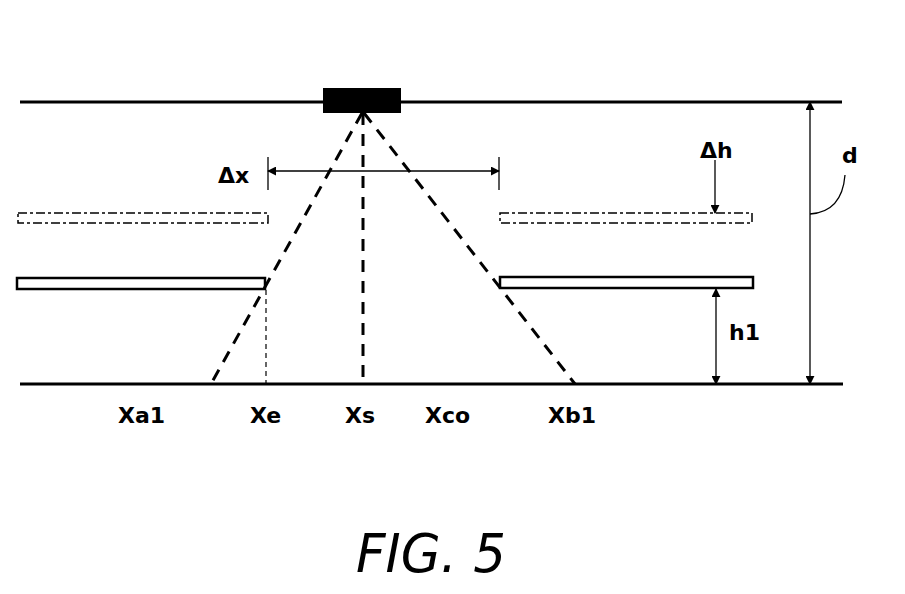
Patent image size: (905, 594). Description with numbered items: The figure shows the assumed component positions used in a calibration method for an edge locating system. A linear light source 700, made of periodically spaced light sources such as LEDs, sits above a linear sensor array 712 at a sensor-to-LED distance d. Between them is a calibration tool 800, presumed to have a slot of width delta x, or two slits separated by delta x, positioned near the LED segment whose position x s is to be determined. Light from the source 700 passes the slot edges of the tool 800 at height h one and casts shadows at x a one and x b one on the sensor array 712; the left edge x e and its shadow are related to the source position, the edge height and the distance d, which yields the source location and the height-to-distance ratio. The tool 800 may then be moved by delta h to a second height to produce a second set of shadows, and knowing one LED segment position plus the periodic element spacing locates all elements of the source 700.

The linear light source 700 is at (374, 88).
The calibration tool 800 is at (640, 212).
The linear sensor array 712 is at (826, 384).